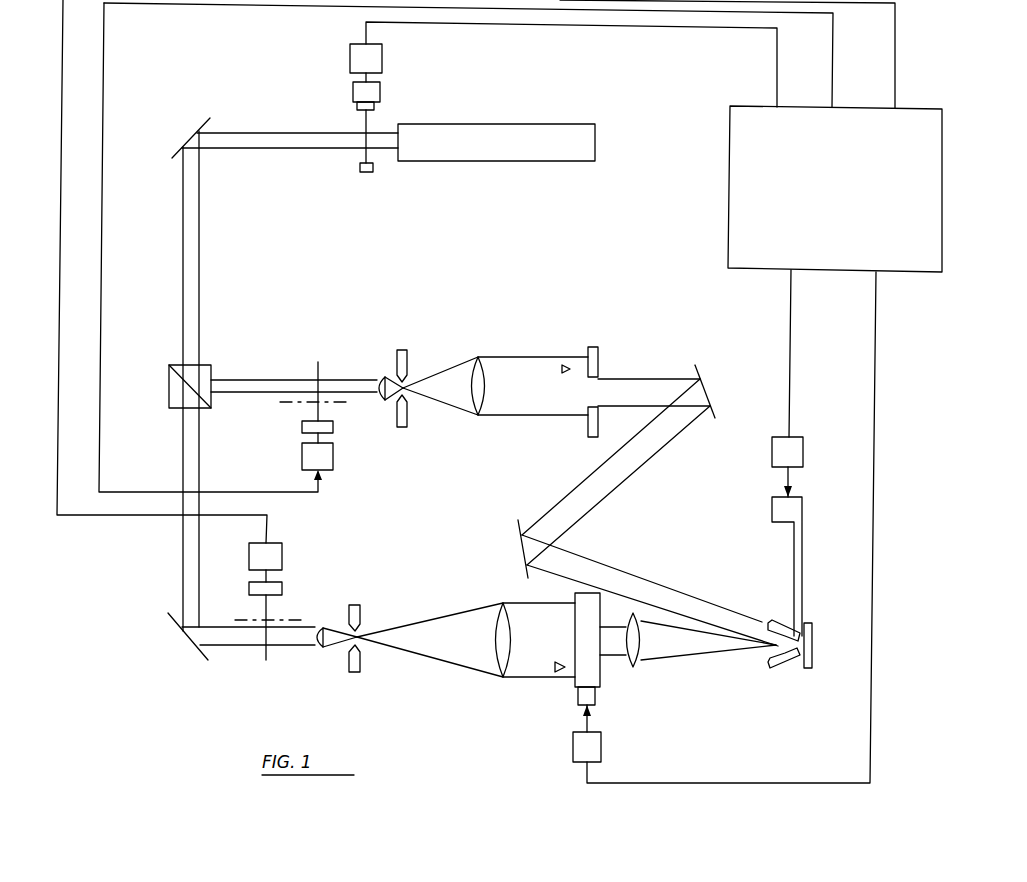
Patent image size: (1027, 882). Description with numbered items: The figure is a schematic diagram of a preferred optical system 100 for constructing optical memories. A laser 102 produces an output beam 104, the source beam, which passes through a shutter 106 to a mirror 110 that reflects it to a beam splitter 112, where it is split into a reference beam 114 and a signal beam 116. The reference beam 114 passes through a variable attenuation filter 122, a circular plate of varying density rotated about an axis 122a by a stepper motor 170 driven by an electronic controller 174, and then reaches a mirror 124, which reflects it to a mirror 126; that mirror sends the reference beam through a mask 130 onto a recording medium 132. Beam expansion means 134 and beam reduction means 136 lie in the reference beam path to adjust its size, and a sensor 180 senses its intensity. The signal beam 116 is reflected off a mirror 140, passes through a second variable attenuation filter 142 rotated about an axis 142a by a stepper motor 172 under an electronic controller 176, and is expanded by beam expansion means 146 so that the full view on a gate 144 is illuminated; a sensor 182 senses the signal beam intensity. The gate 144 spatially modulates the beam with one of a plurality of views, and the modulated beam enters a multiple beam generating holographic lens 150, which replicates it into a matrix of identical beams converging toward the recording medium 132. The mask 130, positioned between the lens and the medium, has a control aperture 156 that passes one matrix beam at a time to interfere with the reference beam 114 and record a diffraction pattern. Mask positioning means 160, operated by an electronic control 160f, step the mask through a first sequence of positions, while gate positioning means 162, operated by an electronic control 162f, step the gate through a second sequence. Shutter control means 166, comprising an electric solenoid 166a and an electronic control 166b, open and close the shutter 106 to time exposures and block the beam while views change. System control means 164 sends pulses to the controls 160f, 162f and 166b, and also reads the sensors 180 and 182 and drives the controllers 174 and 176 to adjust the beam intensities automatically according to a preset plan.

The optical system 100 is at (548, 243).
The laser 102 is at (550, 124).
The output beam 104 is at (303, 130).
The shutter 106 is at (347, 158).
The mirror 110 is at (195, 125).
The beam splitter 112 is at (180, 363).
The reference beam 114 is at (263, 378).
The signal beam 116 is at (182, 557).
The variable attenuation filter 122 is at (315, 368).
The axis 122a is at (290, 405).
The mirror 124 is at (716, 378).
The mirror 126 is at (515, 535).
The mask 130 is at (786, 624).
The recording medium 132 is at (813, 630).
The beam expansion means 134 is at (443, 338).
The beam reduction means 136 is at (588, 422).
The mirror 140 is at (180, 648).
The variable attenuation filter 142 is at (262, 660).
The axis 142a is at (292, 615).
The gate 144 is at (602, 693).
The beam expansion means 146 is at (388, 663).
The multiple beam generating holographic lens 150 is at (641, 660).
The control aperture 156 is at (772, 670).
The mask positioning means 160 is at (766, 482).
The electronic control 160f is at (803, 447).
The gate positioning means 162 is at (555, 735).
The electronic control 162f is at (601, 748).
The system control means 164 is at (499, 391).
The shutter control means 166 is at (322, 60).
The electric solenoid 166a is at (380, 92).
The electronic control 166b is at (382, 58).
The stepper motor 170 is at (333, 427).
The stepper motor 172 is at (283, 585).
The electronic controller 174 is at (333, 465).
The electronic controller 176 is at (283, 557).
The sensor 180 is at (560, 362).
The sensor 182 is at (557, 676).